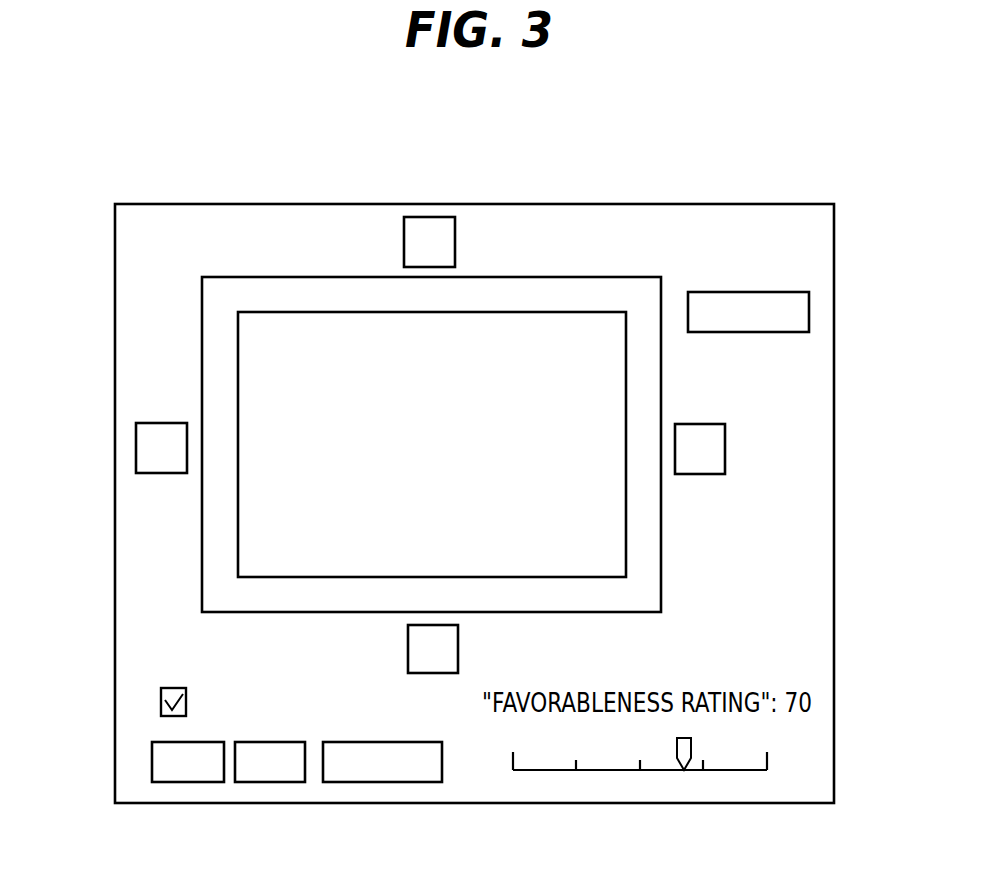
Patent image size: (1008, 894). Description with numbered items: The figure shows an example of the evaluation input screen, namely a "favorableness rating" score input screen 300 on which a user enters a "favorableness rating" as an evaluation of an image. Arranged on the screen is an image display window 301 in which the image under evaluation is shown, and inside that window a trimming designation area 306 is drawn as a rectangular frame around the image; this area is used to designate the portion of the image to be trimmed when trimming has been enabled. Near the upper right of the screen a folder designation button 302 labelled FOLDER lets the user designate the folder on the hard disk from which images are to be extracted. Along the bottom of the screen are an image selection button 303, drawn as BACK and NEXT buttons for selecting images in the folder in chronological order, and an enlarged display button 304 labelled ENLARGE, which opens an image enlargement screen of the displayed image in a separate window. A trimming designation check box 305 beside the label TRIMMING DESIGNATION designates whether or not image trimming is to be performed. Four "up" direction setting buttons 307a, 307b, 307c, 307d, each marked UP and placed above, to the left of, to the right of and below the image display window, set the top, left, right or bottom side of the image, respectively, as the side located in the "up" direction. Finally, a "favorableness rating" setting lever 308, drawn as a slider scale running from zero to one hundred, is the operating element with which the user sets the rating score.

The "favorableness rating" score input screen 300 is at (210, 205).
The image display window 301 is at (537, 277).
The folder designation button 302 is at (809, 312).
The image selection button 303 is at (273, 782).
The enlarged display button 304 is at (368, 782).
The trimming designation check box 305 is at (161, 702).
The trimming designation area 306 is at (317, 312).
The "up" direction setting button 307a is at (455, 240).
The "up" direction setting button 307b is at (136, 445).
The "up" direction setting button 307c is at (725, 443).
The "up" direction setting button 307d is at (458, 652).
The "favorableness rating" setting lever 308 is at (630, 770).